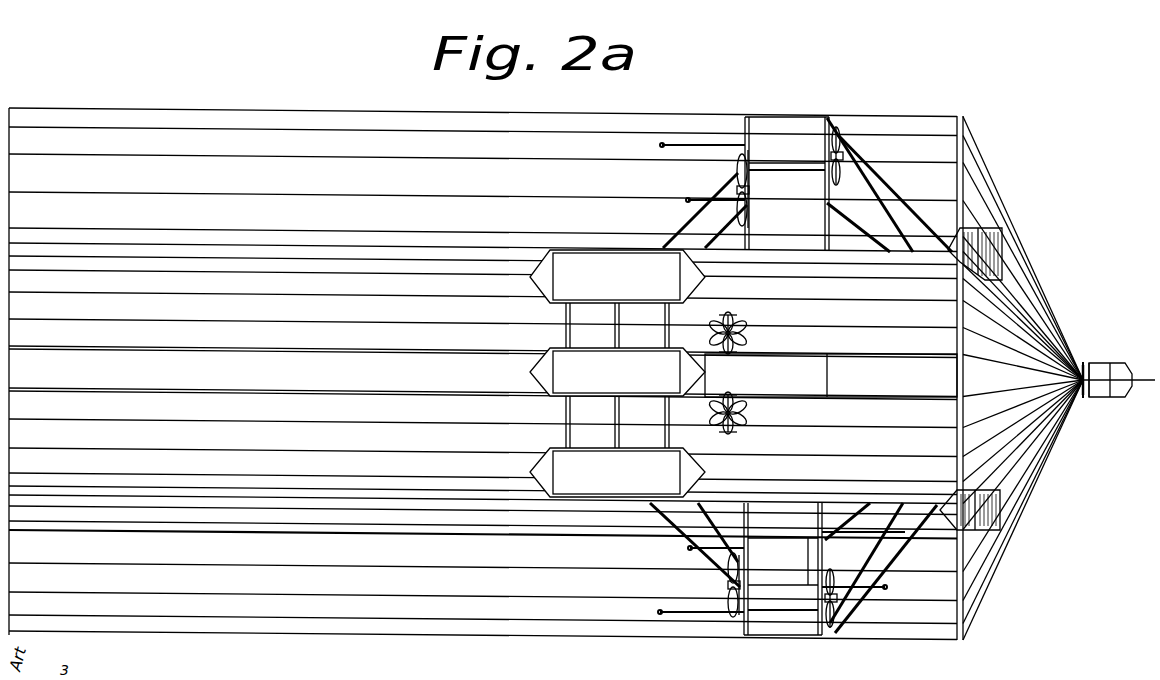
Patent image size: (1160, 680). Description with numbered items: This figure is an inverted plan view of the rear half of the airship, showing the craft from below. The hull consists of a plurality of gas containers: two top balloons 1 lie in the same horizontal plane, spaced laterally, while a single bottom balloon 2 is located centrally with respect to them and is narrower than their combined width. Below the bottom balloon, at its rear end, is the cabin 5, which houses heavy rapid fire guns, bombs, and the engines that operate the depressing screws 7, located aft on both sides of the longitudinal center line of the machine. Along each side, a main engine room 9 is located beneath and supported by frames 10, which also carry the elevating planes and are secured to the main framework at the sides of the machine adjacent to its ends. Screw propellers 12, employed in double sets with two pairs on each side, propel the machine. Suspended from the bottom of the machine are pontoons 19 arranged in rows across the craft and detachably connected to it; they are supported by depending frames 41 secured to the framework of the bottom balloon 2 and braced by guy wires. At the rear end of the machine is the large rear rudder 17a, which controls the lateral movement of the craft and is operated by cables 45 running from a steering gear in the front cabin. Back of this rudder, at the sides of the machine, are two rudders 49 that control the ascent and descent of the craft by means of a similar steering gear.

The top balloon 1 is at (286, 119).
The bottom balloon 2 is at (358, 333).
The cabin 5 is at (831, 375).
The depressing screw 7 is at (740, 331).
The main engine room 9 is at (788, 148).
The frame 10 is at (747, 117).
The screw propeller 12 is at (735, 170).
The rear rudder 17a is at (1120, 397).
The pontoon 19 is at (617, 373).
The depending frame 41 is at (565, 419).
The cable 45 is at (1085, 364).
The rudder 49 is at (996, 238).